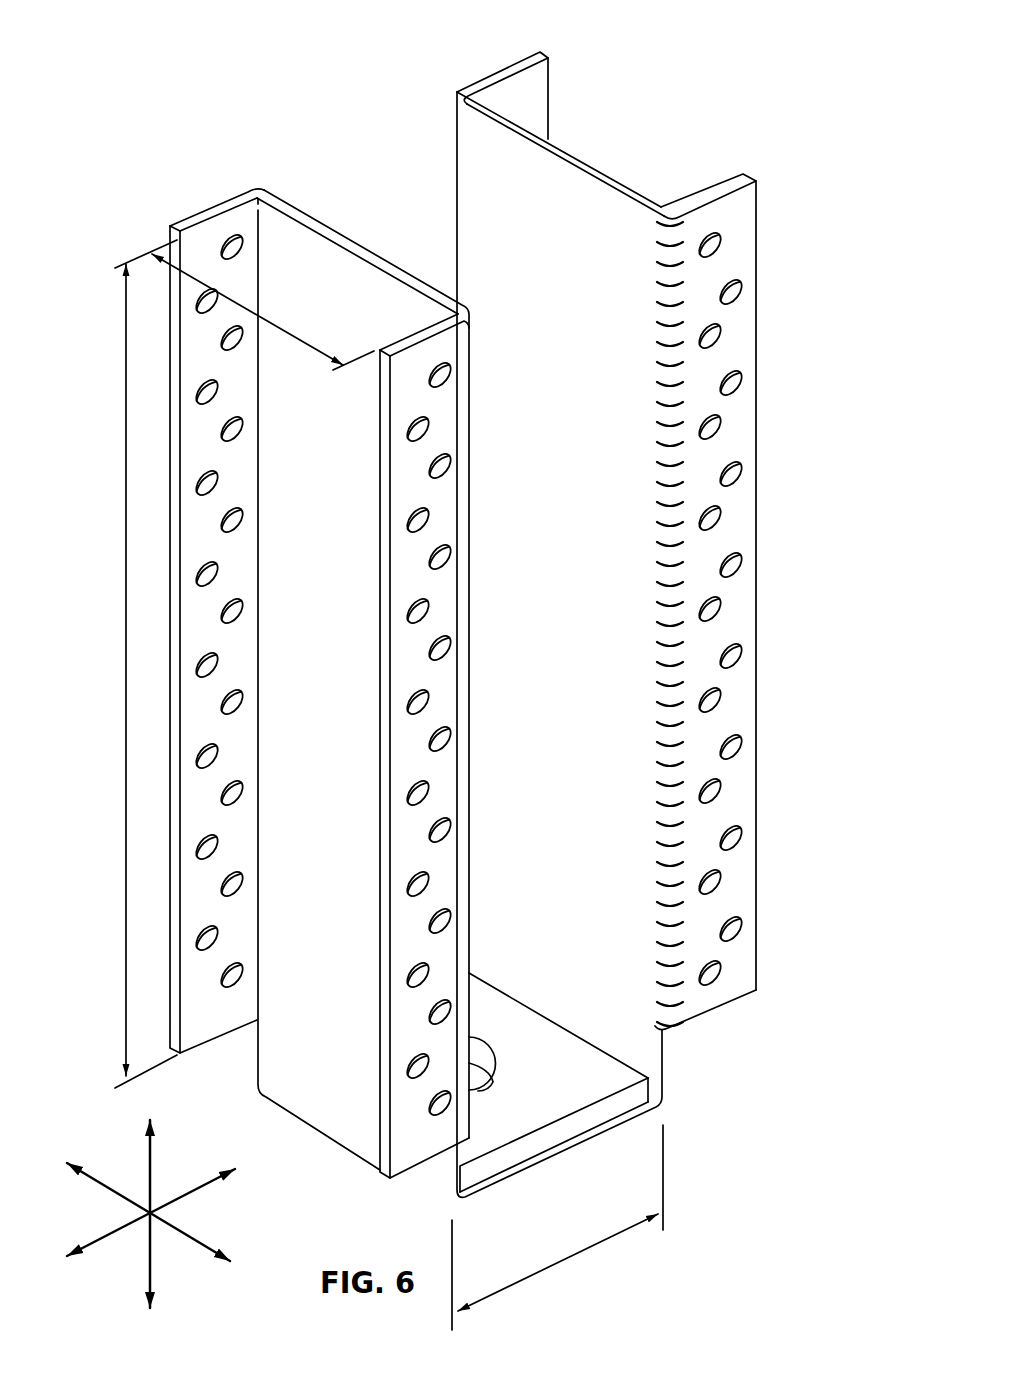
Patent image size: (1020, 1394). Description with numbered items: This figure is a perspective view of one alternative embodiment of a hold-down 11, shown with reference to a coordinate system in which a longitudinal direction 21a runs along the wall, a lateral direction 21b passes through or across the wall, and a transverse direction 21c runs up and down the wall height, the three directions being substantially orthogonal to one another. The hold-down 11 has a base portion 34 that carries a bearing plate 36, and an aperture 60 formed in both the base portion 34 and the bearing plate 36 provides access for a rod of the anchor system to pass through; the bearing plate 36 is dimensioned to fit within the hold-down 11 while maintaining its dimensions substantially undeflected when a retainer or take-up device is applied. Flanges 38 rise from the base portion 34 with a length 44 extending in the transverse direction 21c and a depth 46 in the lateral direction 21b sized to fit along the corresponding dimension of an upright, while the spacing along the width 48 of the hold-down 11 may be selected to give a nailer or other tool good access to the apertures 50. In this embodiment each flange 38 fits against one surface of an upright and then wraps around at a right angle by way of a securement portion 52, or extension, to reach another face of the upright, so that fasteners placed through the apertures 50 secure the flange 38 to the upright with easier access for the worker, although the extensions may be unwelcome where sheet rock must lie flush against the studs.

The hold-down 11 is at (755, 85).
The longitudinal direction 21a is at (215, 1182).
The lateral direction 21b is at (198, 1247).
The transverse direction 21c is at (153, 1162).
The base portion 34 is at (524, 1180).
The bearing plate 36 is at (599, 1137).
The flanges 38 is at (325, 493).
The length 44 is at (120, 622).
The depth 46 is at (307, 340).
The width 48 is at (588, 1252).
The apertures 50 is at (744, 748).
The securement portion 52 is at (191, 214).
The aperture 60 is at (508, 1063).